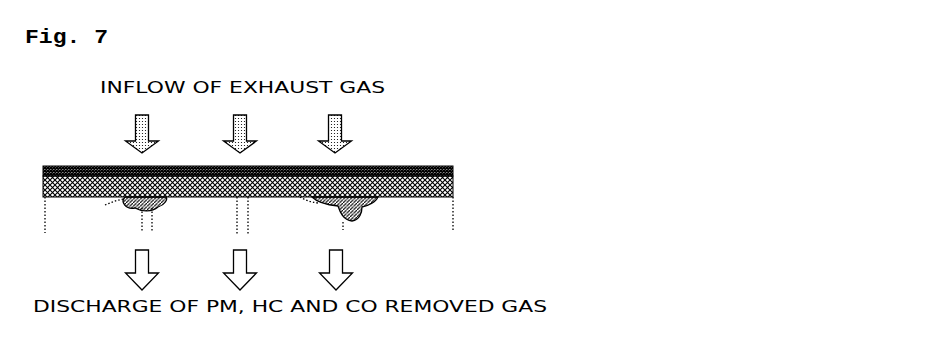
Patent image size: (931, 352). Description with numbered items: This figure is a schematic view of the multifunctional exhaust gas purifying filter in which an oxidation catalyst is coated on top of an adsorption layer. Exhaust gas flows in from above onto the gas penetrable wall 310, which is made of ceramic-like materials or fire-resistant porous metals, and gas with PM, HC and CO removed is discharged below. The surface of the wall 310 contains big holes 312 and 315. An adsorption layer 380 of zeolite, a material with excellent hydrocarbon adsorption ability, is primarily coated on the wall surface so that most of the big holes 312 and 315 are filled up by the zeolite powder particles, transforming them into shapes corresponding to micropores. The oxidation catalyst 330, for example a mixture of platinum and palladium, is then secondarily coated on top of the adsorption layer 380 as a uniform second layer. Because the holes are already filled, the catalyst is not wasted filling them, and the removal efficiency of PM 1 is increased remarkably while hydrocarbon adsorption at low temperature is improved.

The PM 1 is at (301, 185).
The oxidation catalyst 330 is at (455, 176).
The adsorption layer 380 is at (457, 190).
The gas penetrable wall 310 is at (449, 218).
The big hole 315 is at (118, 206).
The big hole 312 is at (156, 212).